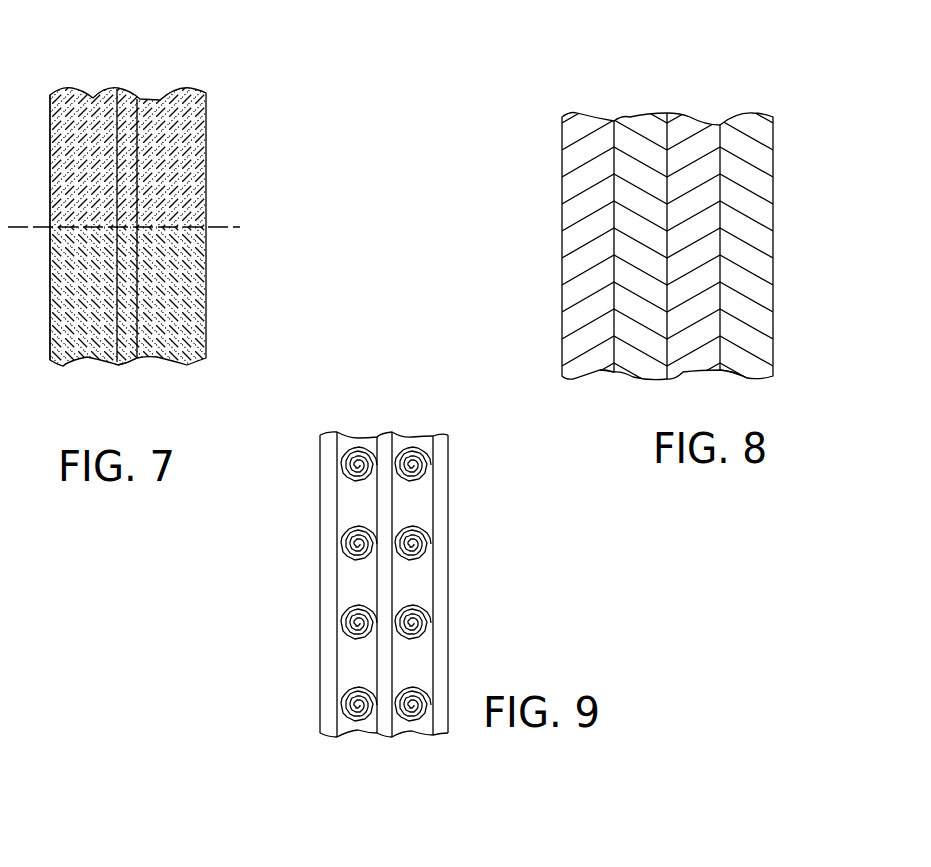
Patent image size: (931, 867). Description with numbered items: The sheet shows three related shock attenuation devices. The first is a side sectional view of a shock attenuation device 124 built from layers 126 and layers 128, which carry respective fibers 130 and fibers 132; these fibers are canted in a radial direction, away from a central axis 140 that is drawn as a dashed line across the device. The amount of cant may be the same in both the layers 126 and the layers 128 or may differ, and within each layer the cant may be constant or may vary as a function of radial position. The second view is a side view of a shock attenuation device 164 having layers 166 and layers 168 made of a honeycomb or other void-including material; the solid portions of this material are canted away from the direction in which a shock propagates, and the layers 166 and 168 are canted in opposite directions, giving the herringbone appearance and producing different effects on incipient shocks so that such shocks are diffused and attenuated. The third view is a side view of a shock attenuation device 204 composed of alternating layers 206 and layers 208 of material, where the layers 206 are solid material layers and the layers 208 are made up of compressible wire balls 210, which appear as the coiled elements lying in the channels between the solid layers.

In FIG. 7, the shock attenuation device 124 is at (100, 58).
In FIG. 7, the layer 126 is at (93, 98).
In FIG. 7, the layer 128 is at (125, 362).
In FIG. 7, the fiber 130 is at (58, 138).
In FIG. 7, the fiber 132 is at (125, 177).
In FIG. 7, the central axis 140 is at (222, 227).
In FIG. 8, the shock attenuation device 164 is at (603, 75).
In FIG. 8, the layer 166 is at (590, 122).
In FIG. 8, the layer 168 is at (742, 370).
In FIG. 9, the shock attenuation device 204 is at (350, 398).
In FIG. 9, the layer 206 is at (328, 436).
In FIG. 9, the layer 208 is at (417, 736).
In FIG. 9, the compressible wire ball 210 is at (428, 550).